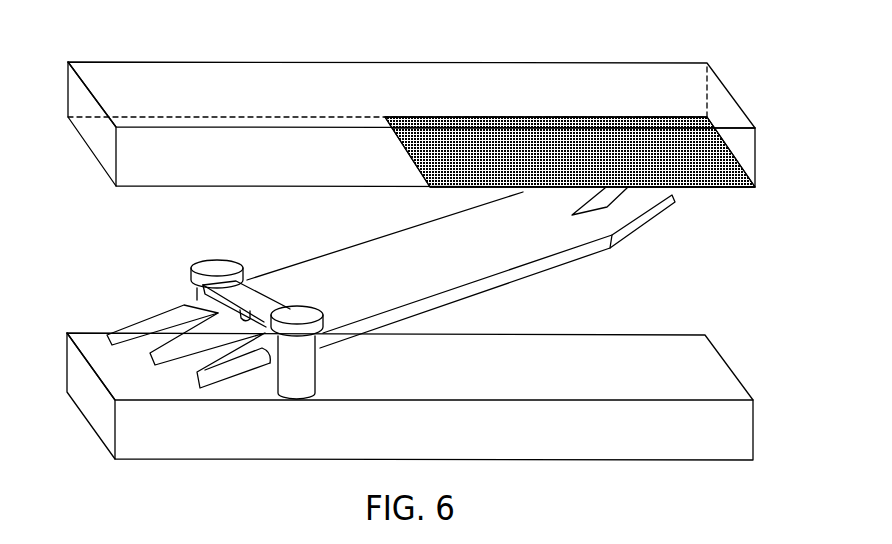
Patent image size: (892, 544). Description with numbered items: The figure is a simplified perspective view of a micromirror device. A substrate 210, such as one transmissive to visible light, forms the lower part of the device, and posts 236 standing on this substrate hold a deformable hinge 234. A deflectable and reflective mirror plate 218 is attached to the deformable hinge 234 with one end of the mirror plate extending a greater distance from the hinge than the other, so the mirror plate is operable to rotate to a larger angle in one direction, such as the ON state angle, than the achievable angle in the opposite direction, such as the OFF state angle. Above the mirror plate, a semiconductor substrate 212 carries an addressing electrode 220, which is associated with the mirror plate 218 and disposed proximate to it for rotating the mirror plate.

The substrate 210 is at (598, 355).
The semiconductor substrate 212 is at (240, 82).
The mirror plate 218 is at (410, 256).
The addressing electrode 220 is at (712, 188).
The deformable hinge 234 is at (258, 288).
The posts 236 is at (313, 365).